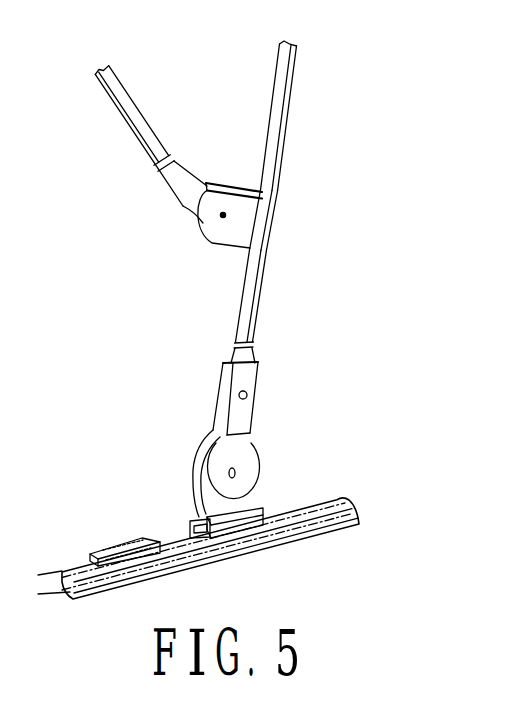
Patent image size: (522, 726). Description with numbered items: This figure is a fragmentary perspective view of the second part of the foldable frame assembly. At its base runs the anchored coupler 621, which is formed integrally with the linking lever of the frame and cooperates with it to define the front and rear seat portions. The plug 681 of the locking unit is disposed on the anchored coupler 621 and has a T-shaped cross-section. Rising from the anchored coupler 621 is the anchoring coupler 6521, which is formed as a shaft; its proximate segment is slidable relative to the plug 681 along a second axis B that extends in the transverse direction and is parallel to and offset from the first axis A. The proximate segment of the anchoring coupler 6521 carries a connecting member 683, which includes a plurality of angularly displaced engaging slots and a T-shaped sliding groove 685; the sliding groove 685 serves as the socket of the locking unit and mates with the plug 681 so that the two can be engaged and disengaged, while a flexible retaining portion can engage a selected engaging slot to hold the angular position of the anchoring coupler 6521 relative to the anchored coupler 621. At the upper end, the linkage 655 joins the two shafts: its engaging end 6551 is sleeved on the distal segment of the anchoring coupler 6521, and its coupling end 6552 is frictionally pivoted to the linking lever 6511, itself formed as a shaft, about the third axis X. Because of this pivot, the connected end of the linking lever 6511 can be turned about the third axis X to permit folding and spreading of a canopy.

The linking lever 6511 is at (132, 129).
The anchoring coupler 6521 is at (280, 92).
The linkage 655 is at (227, 243).
The coupling end 6552 is at (201, 214).
The engaging end 6551 is at (257, 220).
The connecting member 683 is at (262, 502).
The T-shaped sliding groove 685 is at (193, 520).
The plug 681 is at (125, 545).
The anchored coupler 621 is at (318, 531).
The third axis X is at (223, 212).
The first axis A is at (356, 512).
The second axis B is at (347, 496).